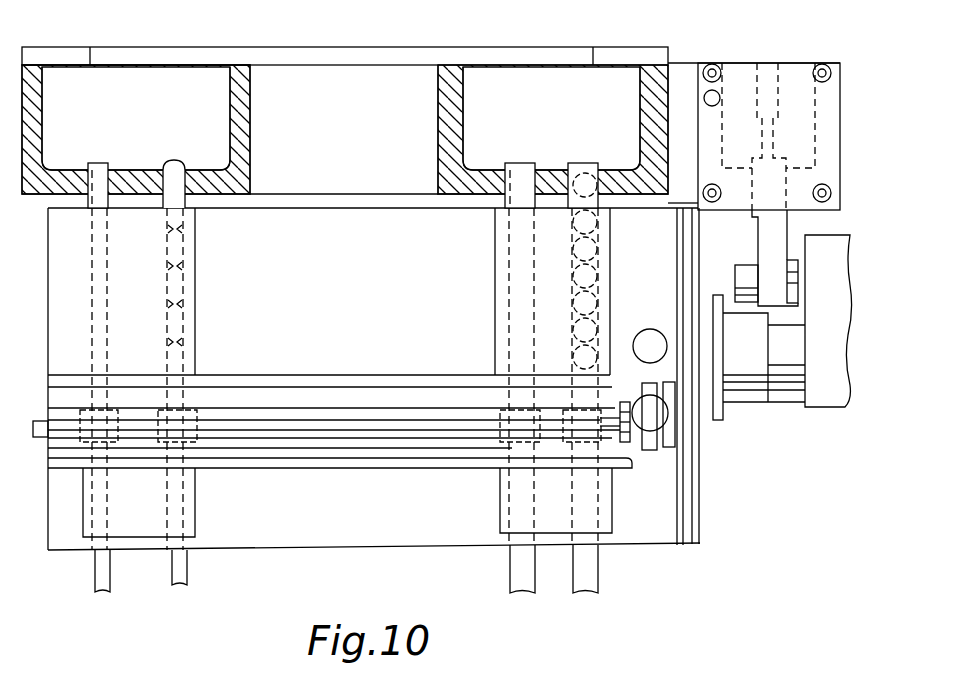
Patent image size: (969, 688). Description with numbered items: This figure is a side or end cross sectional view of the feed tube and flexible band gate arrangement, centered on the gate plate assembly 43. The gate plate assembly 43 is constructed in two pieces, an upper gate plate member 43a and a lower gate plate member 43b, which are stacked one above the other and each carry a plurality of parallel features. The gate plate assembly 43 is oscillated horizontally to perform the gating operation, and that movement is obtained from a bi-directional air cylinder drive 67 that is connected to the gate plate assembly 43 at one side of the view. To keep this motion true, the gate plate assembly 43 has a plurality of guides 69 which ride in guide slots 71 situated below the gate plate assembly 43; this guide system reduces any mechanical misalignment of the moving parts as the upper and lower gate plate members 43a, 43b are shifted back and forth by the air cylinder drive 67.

The gate plate assembly 43 is at (332, 406).
The upper gate plate member 43a is at (273, 375).
The lower gate plate member 43b is at (452, 430).
The bi-directional air cylinder drive 67 is at (668, 445).
The guides 69 is at (110, 450).
The guide slots 71 is at (237, 460).